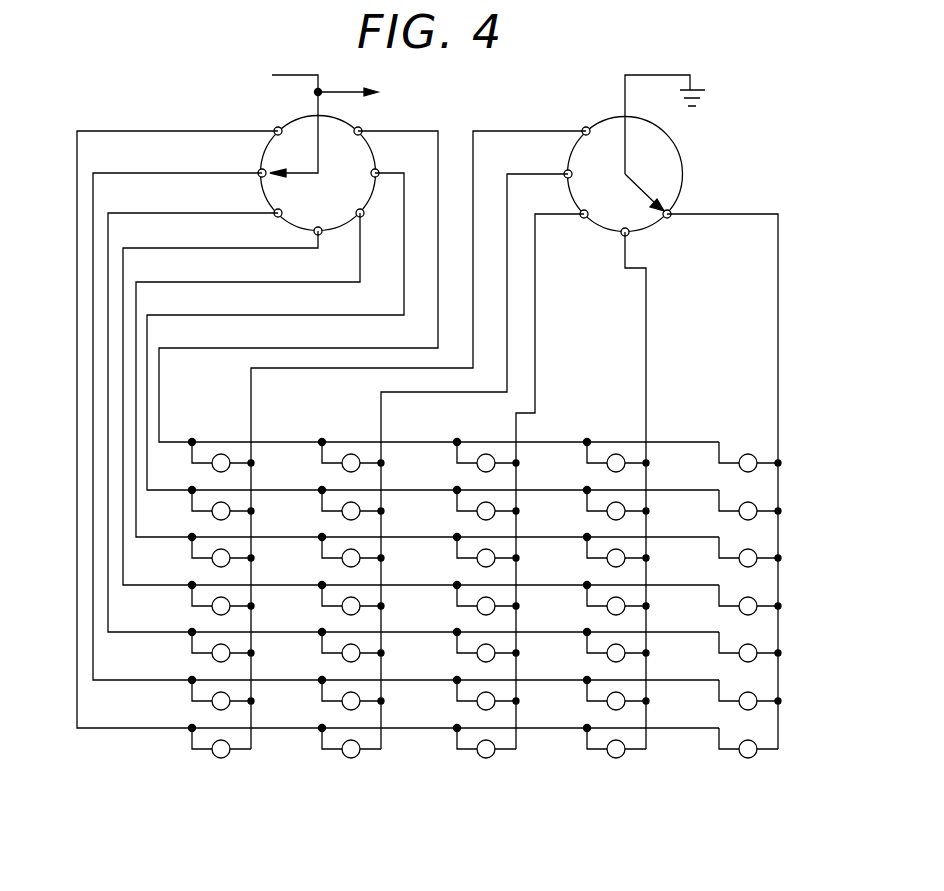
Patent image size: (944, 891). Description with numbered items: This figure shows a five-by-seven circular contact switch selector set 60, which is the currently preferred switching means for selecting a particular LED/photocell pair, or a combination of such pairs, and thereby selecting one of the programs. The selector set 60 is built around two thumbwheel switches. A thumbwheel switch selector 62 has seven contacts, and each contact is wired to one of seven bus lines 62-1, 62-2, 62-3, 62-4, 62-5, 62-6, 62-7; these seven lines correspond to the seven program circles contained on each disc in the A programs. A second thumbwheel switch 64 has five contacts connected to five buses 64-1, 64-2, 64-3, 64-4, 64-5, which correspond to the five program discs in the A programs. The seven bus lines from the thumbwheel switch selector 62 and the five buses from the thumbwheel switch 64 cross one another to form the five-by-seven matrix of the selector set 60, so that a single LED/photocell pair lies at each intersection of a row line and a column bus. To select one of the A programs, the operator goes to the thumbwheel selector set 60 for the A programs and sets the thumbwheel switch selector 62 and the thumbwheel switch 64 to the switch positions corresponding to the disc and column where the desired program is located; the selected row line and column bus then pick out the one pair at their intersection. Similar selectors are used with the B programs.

The circular contact switch selector set 60 is at (431, 128).
The thumbwheel switch selector 62 is at (298, 130).
The thumbwheel switch 64 is at (612, 125).
The bus line 62-1 is at (439, 286).
The bus line 62-2 is at (433, 331).
The bus line 62-3 is at (427, 375).
The bus line 62-4 is at (421, 408).
The bus line 62-5 is at (413, 422).
The bus line 62-6 is at (406, 426).
The bus line 62-7 is at (398, 429).
The bus 64-1 is at (418, 430).
The bus 64-2 is at (474, 453).
The bus 64-3 is at (550, 473).
The bus 64-4 is at (655, 490).
The bus 64-5 is at (741, 481).